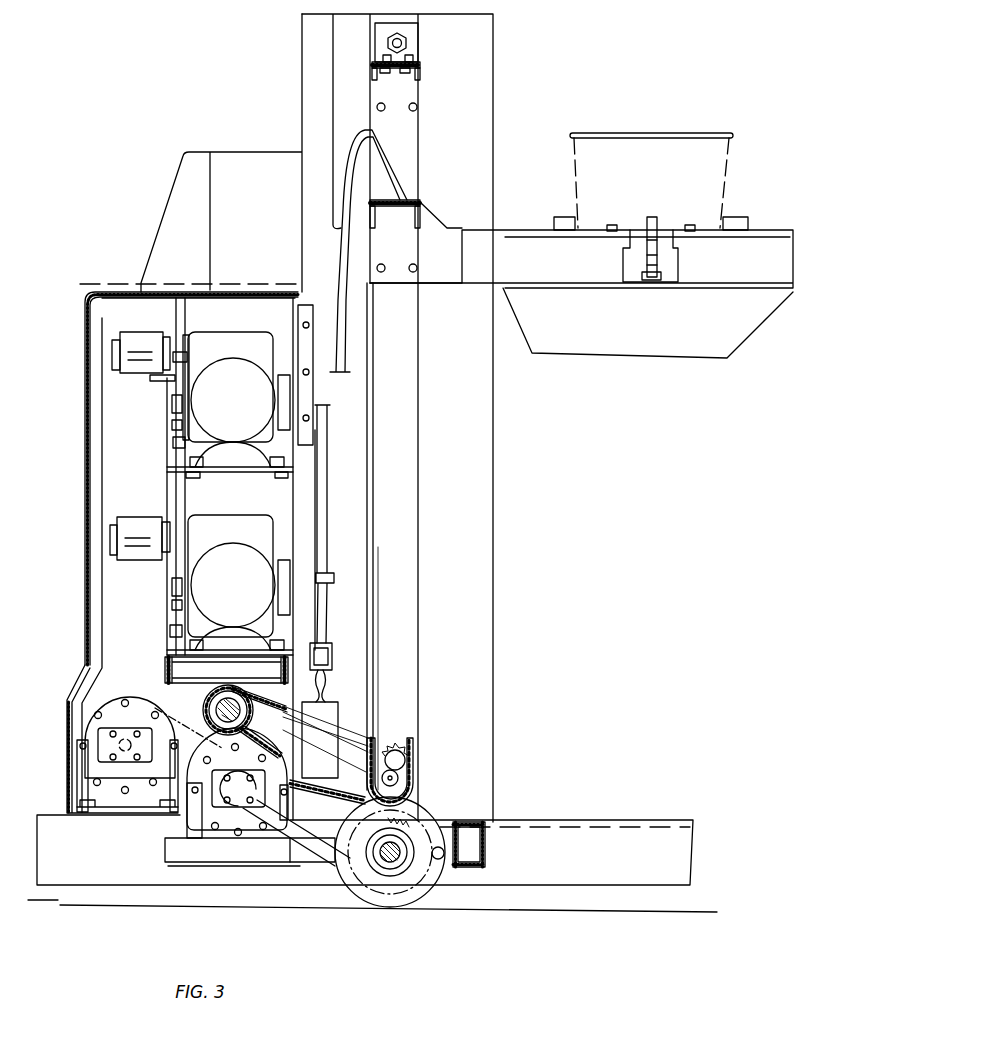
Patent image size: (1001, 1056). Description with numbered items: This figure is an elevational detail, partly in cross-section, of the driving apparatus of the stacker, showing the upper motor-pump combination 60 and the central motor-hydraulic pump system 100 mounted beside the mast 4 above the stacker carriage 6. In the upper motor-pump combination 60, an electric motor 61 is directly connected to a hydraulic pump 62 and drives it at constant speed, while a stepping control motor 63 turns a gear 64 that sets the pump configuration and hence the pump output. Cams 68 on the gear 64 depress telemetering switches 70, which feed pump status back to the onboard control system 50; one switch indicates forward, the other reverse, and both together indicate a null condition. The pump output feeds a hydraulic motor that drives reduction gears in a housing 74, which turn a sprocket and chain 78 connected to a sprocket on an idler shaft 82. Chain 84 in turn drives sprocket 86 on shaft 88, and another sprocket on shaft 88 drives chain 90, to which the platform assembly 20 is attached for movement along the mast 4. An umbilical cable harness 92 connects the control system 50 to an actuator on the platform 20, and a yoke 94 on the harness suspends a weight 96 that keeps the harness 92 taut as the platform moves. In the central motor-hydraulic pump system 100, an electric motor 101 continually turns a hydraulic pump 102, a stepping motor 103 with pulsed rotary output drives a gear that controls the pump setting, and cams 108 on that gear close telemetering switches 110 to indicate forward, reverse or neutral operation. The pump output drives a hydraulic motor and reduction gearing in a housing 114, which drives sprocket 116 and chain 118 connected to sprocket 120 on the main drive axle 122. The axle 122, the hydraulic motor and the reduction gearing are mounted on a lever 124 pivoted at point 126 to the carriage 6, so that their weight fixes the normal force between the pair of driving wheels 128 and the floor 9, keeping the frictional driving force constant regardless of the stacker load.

The mast 4 is at (460, 512).
The stacker carriage 6 is at (493, 818).
The floor 9 is at (525, 906).
The platform assembly 20 is at (486, 257).
The onboard control system 50 is at (260, 218).
The upper motor-pump combination 60 is at (233, 319).
The electric motor 61 is at (258, 347).
The hydraulic pump 62 is at (245, 398).
The stepping control motor 63 is at (143, 348).
The gear 64 is at (192, 382).
The cams 68 is at (172, 426).
The telemetering switches 70 is at (183, 443).
The housing 74 is at (108, 718).
The chain 78 is at (173, 728).
The idler shaft 82 is at (238, 695).
The chain 84 is at (213, 700).
The sprocket 86 is at (398, 768).
The shaft 88 is at (399, 780).
The chain 90 is at (375, 748).
The umbilical cable harness 92 is at (322, 548).
The yoke 94 is at (333, 665).
The weight 96 is at (338, 712).
The central motor-hydraulic pump system 100 is at (232, 507).
The electric motor 101 is at (260, 530).
The hydraulic pump 102 is at (218, 588).
The stepping motor 103 is at (152, 553).
The cams 108 is at (187, 602).
The telemetering switches 110 is at (167, 623).
The housing 114 is at (207, 752).
The sprocket 116 is at (238, 812).
The chain 118 is at (340, 800).
The sprocket 120 is at (413, 835).
The main drive axle 122 is at (403, 860).
The lever 124 is at (302, 858).
The pivot point 126 is at (448, 853).
The driving wheels 128 is at (398, 900).